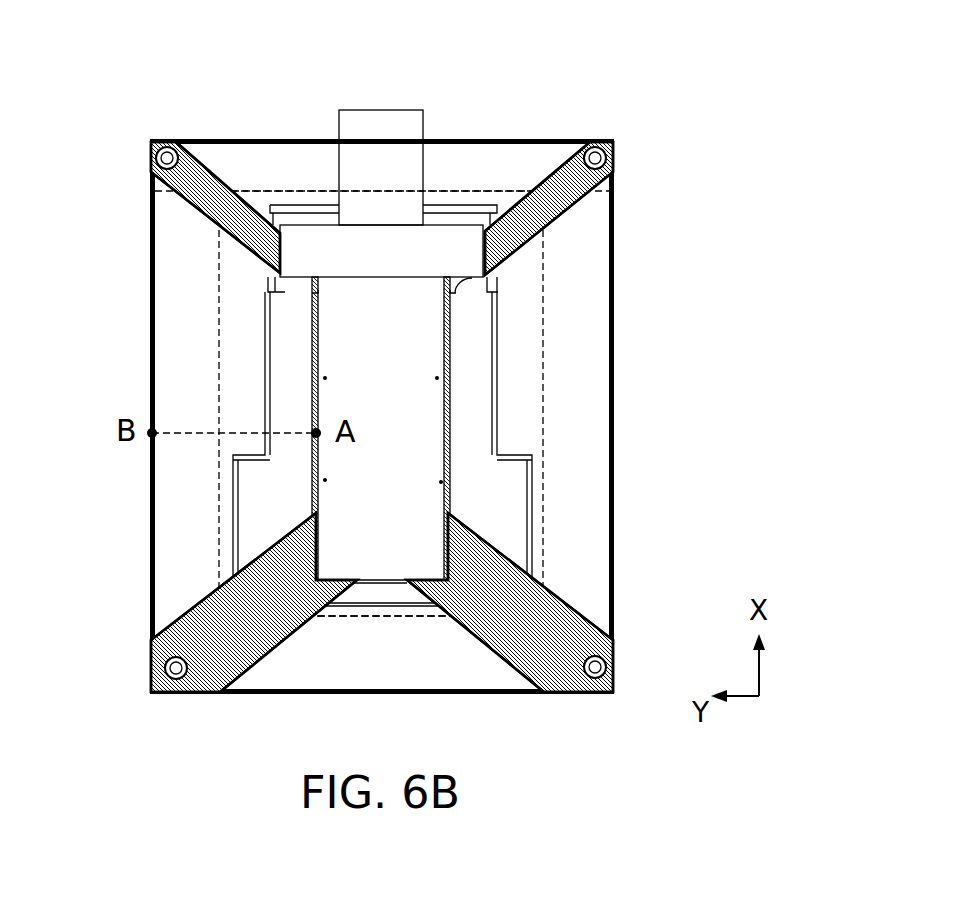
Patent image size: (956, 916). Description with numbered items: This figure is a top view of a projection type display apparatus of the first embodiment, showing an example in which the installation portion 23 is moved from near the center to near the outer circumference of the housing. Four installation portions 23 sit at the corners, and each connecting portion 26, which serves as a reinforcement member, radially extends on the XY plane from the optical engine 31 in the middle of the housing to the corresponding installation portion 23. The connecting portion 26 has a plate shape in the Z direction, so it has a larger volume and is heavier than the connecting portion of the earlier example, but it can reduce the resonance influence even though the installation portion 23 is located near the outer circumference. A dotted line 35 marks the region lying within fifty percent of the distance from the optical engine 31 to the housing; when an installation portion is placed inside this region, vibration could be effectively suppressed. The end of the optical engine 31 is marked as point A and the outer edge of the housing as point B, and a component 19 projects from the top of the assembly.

The connector block 19 is at (387, 117).
The installation portion 23 is at (183, 142).
The connecting portion 26 is at (210, 197).
The optical engine 31 is at (447, 402).
The dotted line 35 is at (218, 357).